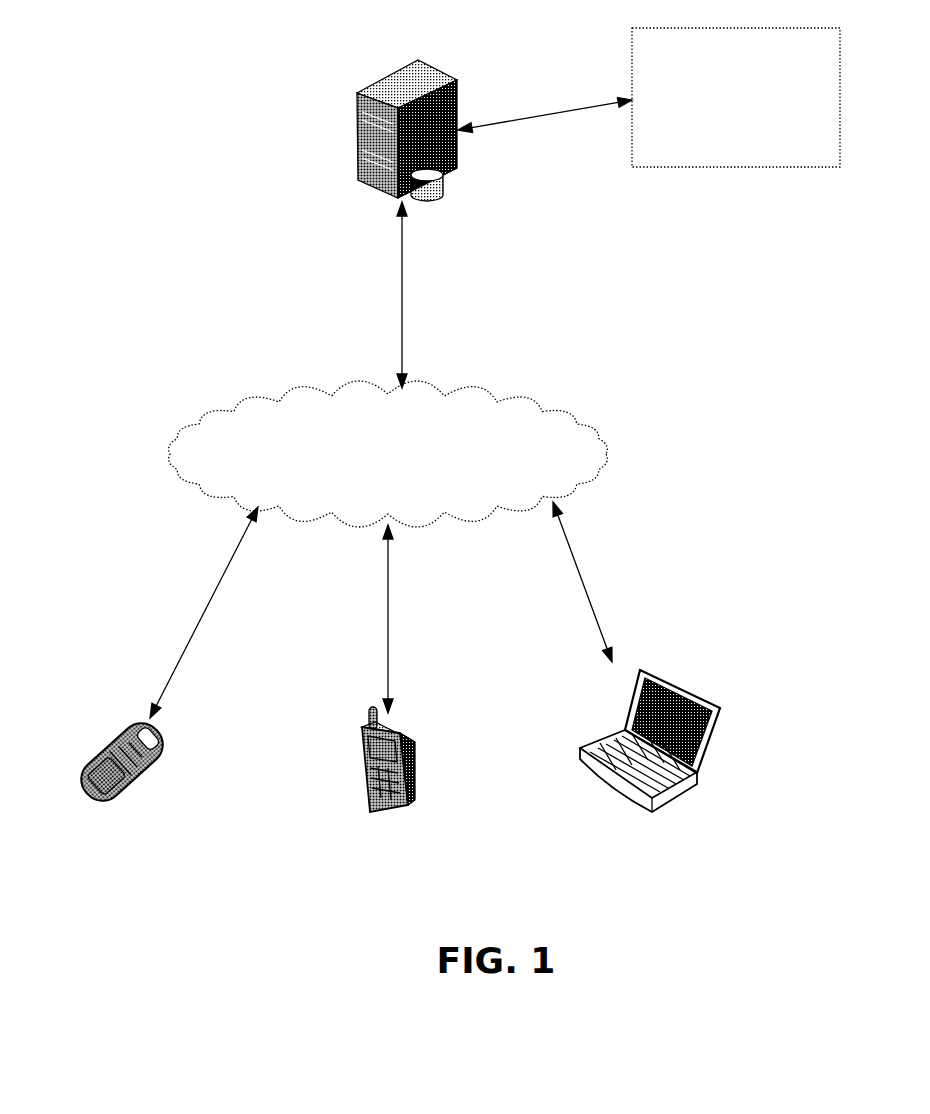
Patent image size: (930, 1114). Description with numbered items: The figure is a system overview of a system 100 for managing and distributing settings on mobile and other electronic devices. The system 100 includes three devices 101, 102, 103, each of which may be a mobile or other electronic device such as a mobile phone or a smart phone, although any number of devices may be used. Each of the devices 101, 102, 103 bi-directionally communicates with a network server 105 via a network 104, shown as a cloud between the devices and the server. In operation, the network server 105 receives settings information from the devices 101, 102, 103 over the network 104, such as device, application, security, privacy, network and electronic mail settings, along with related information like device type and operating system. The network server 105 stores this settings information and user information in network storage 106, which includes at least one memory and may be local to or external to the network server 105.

The system 100 is at (100, 349).
The device 101 is at (122, 781).
The device 102 is at (389, 786).
The device 103 is at (650, 752).
The network 104 is at (388, 454).
The network server 105 is at (380, 130).
The network storage 106 is at (736, 97).